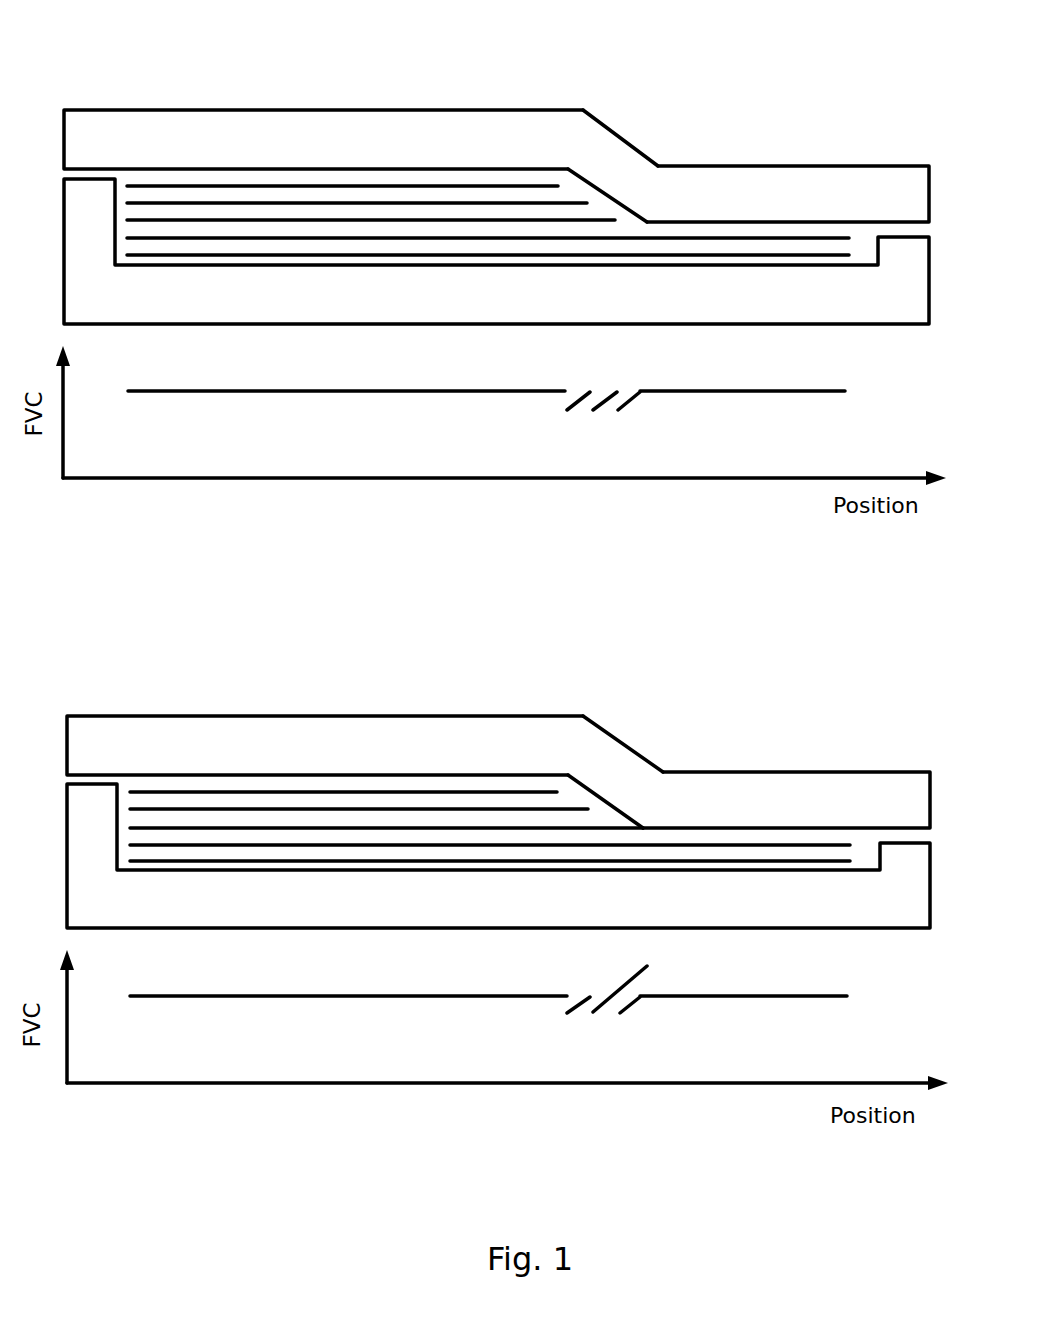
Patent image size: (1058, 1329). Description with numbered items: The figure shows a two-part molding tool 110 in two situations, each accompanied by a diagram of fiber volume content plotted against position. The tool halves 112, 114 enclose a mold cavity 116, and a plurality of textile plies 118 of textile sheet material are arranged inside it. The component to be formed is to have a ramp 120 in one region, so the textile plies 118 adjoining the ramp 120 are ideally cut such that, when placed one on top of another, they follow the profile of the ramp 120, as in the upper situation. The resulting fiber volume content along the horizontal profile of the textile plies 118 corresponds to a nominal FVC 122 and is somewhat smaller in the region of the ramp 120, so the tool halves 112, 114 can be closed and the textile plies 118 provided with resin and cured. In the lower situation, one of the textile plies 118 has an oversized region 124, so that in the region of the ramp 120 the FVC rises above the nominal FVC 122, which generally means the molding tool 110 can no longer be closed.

The molding tool 110 is at (497, 494).
The tool half 112 is at (389, 124).
The tool half 114 is at (352, 302).
The mold cavity 116 is at (566, 184).
The textile plies 118 is at (464, 187).
The ramp 120 is at (669, 132).
The nominal FVC 122 is at (259, 392).
The oversized region 124 is at (618, 829).